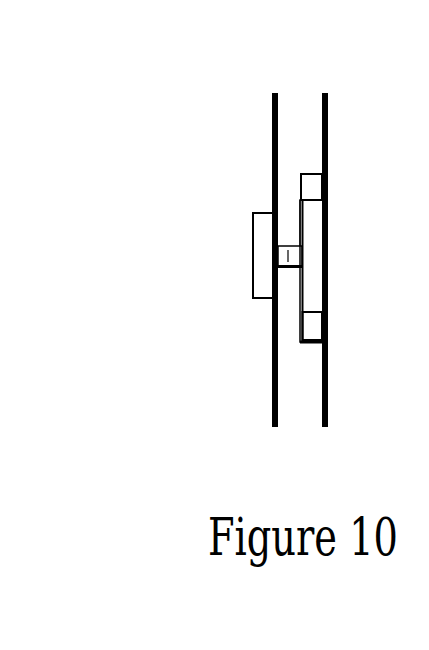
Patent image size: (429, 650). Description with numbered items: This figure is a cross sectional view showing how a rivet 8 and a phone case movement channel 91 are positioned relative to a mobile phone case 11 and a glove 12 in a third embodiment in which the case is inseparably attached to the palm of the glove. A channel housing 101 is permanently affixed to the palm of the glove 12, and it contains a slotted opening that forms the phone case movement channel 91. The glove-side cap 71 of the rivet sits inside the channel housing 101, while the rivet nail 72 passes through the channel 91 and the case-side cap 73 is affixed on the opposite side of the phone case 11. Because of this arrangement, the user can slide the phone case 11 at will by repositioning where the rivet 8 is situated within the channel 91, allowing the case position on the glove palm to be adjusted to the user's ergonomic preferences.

The rivet 8 is at (193, 308).
The mobile phone case 11 is at (272, 182).
The glove 12 is at (328, 152).
The glove-side cap 71 is at (323, 220).
The rivet nail 72 is at (290, 257).
The case-side cap 73 is at (253, 258).
The phone case movement channel 91 is at (300, 245).
The channel housing 101 is at (308, 188).